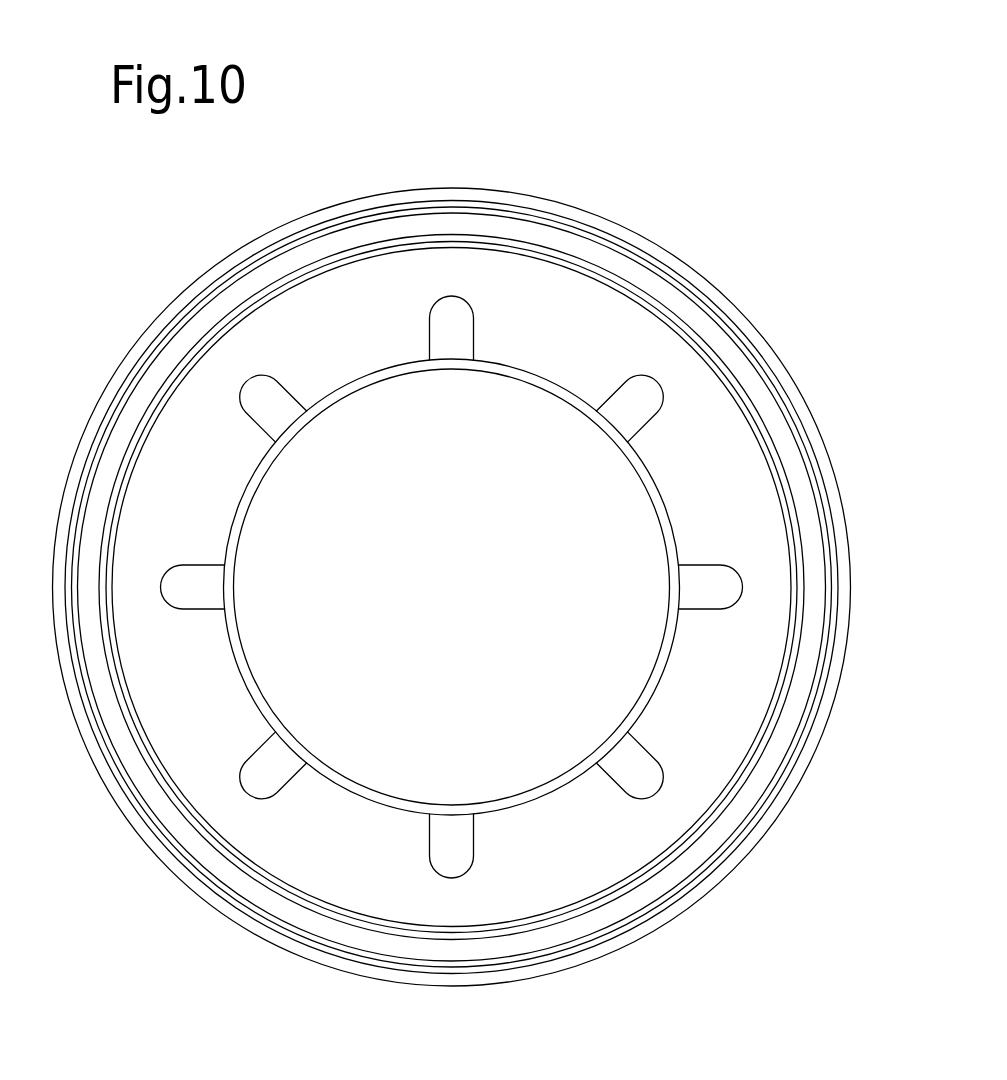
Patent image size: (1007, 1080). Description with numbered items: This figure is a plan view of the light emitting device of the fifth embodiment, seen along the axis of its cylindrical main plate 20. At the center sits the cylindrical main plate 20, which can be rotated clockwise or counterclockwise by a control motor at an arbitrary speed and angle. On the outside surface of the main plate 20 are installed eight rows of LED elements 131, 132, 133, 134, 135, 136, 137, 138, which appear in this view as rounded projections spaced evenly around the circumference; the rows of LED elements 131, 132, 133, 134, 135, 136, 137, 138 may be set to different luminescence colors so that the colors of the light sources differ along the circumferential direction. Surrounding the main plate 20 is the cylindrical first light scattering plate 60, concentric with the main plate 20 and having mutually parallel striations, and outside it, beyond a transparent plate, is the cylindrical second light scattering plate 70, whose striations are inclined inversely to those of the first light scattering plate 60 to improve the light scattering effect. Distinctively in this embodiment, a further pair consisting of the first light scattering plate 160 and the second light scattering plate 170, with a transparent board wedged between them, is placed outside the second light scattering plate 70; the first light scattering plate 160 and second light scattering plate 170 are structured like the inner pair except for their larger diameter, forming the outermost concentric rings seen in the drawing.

The main plate 20 is at (660, 685).
The first light scattering plate 60 is at (567, 270).
The second light scattering plate 70 is at (538, 245).
The row of LED elements 131 is at (451, 877).
The row of LED elements 132 is at (255, 798).
The row of LED elements 133 is at (165, 603).
The row of LED elements 134 is at (252, 376).
The row of LED elements 135 is at (453, 292).
The row of LED elements 136 is at (660, 379).
The row of LED elements 137 is at (745, 580).
The row of LED elements 138 is at (650, 795).
The first light scattering plate 160 is at (781, 405).
The second light scattering plate 170 is at (773, 367).